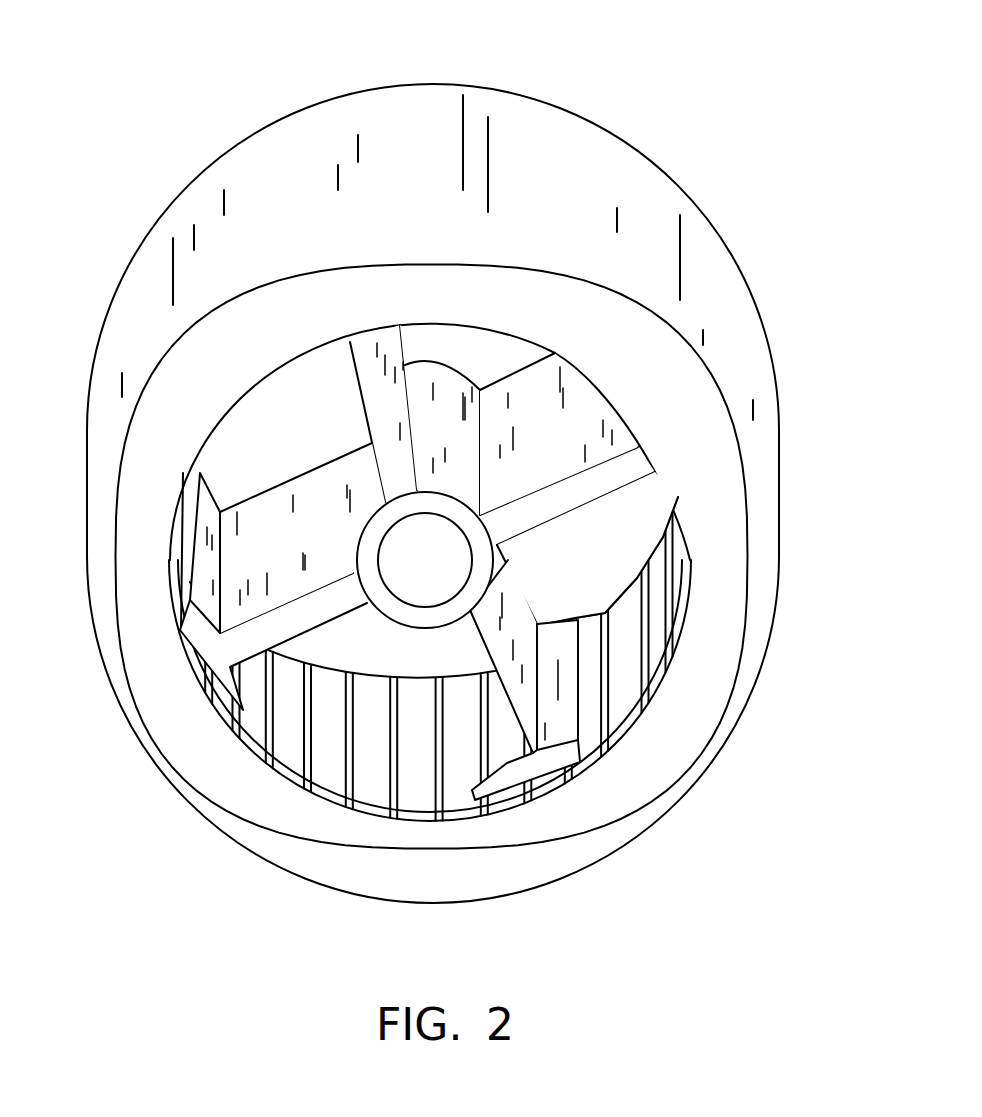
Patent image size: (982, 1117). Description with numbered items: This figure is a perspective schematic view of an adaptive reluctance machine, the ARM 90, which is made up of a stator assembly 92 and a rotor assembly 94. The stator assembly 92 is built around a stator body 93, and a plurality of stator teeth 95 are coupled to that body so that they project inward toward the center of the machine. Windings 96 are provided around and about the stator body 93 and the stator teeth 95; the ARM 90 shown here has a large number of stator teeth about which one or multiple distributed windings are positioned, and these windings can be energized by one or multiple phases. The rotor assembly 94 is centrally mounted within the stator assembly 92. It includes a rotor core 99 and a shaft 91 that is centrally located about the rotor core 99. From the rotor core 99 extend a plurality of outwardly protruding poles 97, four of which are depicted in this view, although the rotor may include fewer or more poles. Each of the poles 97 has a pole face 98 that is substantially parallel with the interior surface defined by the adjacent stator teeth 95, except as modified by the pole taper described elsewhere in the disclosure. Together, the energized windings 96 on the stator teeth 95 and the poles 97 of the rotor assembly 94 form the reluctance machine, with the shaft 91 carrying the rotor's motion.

The ARM 90 is at (434, 477).
The shaft 91 is at (457, 632).
The stator assembly 92 is at (118, 758).
The stator body 93 is at (722, 225).
The rotor assembly 94 is at (532, 552).
The stator teeth 95 is at (330, 654).
The windings 96 is at (434, 493).
The outwardly protruding poles 97 is at (247, 497).
The pole face 98 is at (527, 777).
The rotor core 99 is at (360, 532).